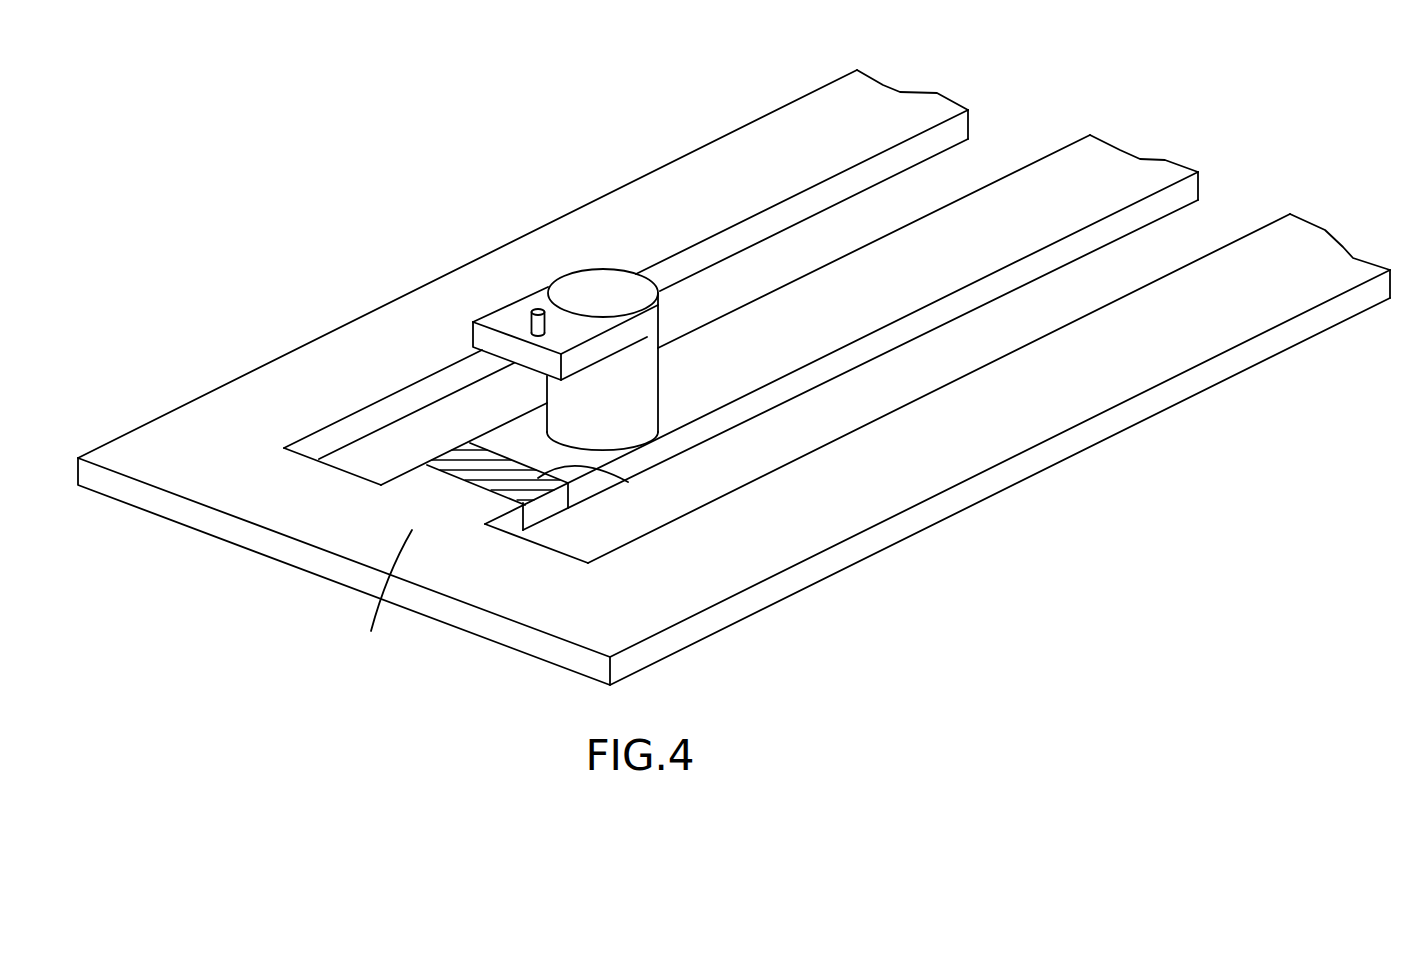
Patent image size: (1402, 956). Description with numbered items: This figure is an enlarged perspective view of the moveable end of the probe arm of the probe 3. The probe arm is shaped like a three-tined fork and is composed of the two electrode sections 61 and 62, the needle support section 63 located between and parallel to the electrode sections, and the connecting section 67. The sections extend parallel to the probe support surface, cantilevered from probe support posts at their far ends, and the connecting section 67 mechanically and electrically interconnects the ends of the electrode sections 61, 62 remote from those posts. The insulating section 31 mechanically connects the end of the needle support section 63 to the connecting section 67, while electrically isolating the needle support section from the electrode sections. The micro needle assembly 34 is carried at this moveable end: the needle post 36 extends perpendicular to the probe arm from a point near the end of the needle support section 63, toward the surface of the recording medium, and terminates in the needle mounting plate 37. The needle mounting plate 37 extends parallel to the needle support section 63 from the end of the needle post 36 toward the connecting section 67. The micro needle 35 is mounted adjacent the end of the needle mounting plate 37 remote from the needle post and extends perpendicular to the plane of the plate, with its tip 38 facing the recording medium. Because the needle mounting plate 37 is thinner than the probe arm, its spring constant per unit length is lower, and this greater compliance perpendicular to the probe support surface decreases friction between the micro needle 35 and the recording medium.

The probe 3 is at (365, 300).
The insulating section 31 is at (540, 478).
The micro needle assembly 34 is at (671, 328).
The micro needle 35 is at (552, 316).
The needle post 36 is at (660, 374).
The needle mounting plate 37 is at (474, 335).
The tip 38 is at (538, 308).
The electrode section 61 is at (722, 160).
The electrode section 62 is at (1250, 262).
The needle support section 63 is at (1028, 190).
The connecting section 67 is at (380, 596).